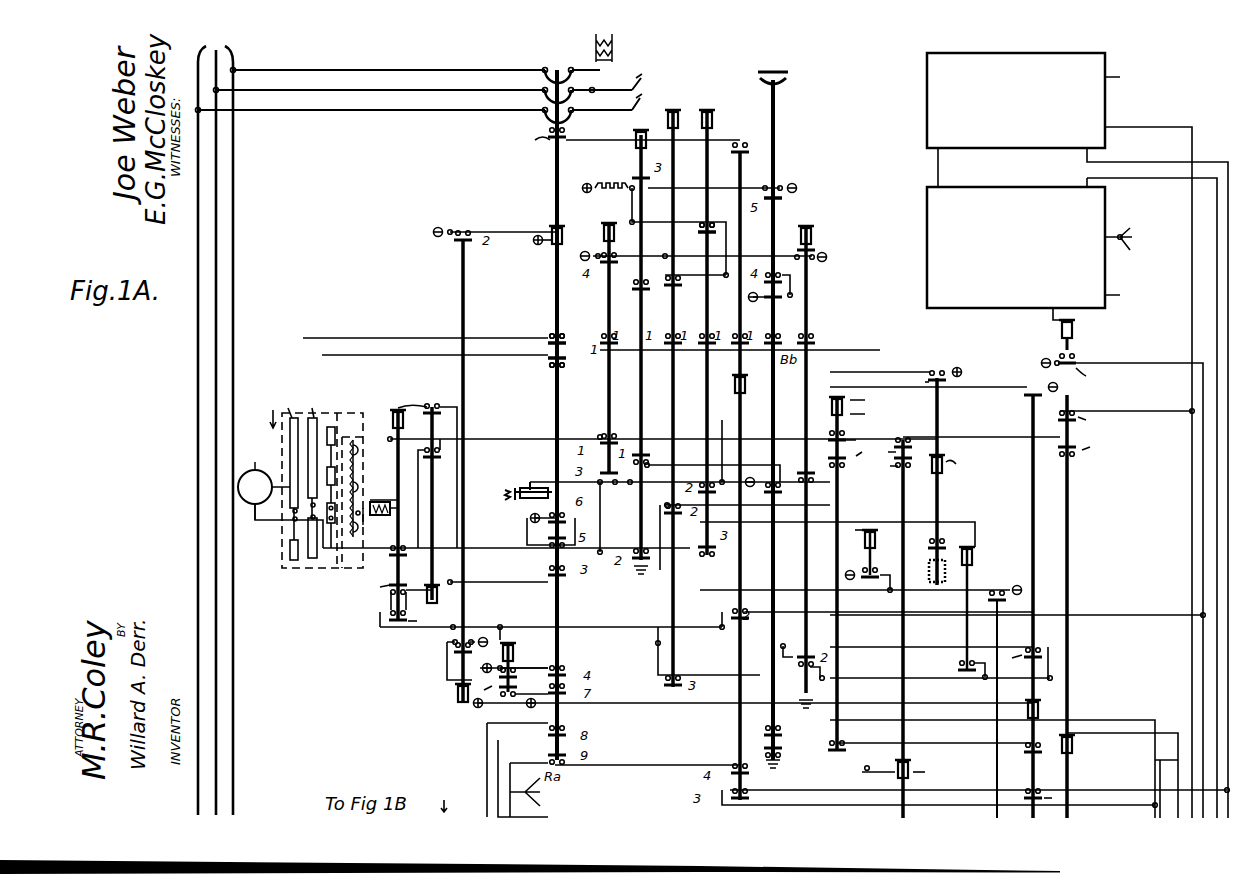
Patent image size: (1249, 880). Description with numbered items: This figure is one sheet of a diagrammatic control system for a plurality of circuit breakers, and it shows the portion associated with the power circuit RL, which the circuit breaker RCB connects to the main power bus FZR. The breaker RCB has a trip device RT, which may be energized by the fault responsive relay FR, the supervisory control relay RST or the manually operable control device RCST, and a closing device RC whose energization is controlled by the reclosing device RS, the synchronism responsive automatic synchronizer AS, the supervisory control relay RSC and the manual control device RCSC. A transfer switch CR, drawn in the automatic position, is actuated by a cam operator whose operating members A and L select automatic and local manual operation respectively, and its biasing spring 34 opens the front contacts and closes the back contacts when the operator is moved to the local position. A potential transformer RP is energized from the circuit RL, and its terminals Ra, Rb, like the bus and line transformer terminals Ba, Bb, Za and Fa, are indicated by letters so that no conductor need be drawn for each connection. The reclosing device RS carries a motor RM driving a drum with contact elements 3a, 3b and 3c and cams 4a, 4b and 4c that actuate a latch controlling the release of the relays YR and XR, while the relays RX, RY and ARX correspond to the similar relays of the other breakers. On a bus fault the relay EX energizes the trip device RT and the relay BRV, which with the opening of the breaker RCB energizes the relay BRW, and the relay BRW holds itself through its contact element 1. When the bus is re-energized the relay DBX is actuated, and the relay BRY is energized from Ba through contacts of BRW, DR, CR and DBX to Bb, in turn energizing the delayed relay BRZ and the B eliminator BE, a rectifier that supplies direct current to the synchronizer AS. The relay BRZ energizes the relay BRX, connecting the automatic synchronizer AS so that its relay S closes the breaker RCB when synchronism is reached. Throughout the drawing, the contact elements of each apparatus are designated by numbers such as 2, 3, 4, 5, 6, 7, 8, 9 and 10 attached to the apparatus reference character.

The main power bus FZR is at (215, 422).
The circuit breaker RCB is at (554, 86).
The potential transformer RP is at (641, 62).
The power circuit RL is at (648, 84).
The closing device RC is at (545, 246).
The manually operable circuit control device RCST is at (642, 130).
The supervisory control relay RSC is at (684, 102).
The supervisory control relay RST is at (722, 102).
The relay BRX is at (756, 140).
The transfer switch CR is at (784, 68).
The manually operable control device RCSC is at (818, 240).
The relay ARX is at (616, 214).
The B eliminator BE is at (1012, 136).
The automatic synchronizer AS is at (1022, 292).
The relay S is at (1092, 350).
The delayed-pickup-delayed-release relay BRZ is at (948, 364).
The relay DR is at (828, 406).
The fault responsive relay FR is at (892, 534).
The delayed-release relay BRV is at (1006, 564).
The relay BRW is at (1028, 696).
The relay BRY is at (1072, 746).
The relay EX is at (992, 730).
The relay DBX is at (938, 760).
The trip device RT is at (528, 490).
The relay RX is at (458, 722).
The relay RY is at (504, 714).
The reclosing device RS is at (356, 396).
The relay YR is at (405, 384).
The relay XR is at (441, 384).
The rheostat motor RM is at (247, 528).
The contact element 1 is at (566, 336).
The contact element 2 is at (561, 368).
The contact element 3 is at (822, 250).
The contact element 4 is at (690, 240).
The contact element 5 is at (732, 154).
The contact element 6 is at (787, 727).
The contact element 7 is at (391, 560).
The contact element 8 is at (440, 464).
The contact element 9 is at (424, 419).
The contact element 10 is at (566, 135).
The biasing spring 34 is at (784, 758).
The contact element 3a is at (327, 505).
The contact element 3b is at (327, 468).
The contact element 3c is at (335, 427).
The cam 4a is at (358, 484).
The cam 4b is at (358, 456).
The cam 4c is at (358, 532).
The transformer terminal Ra is at (596, 40).
The transformer terminal Rb is at (612, 40).
The transformer terminal Ba is at (255, 462).
The transformer terminal Bb is at (745, 150).
The transformer terminal Za is at (552, 791).
The transformer terminal Fa is at (551, 806).
The operating member A is at (760, 76).
The operating member L is at (790, 76).